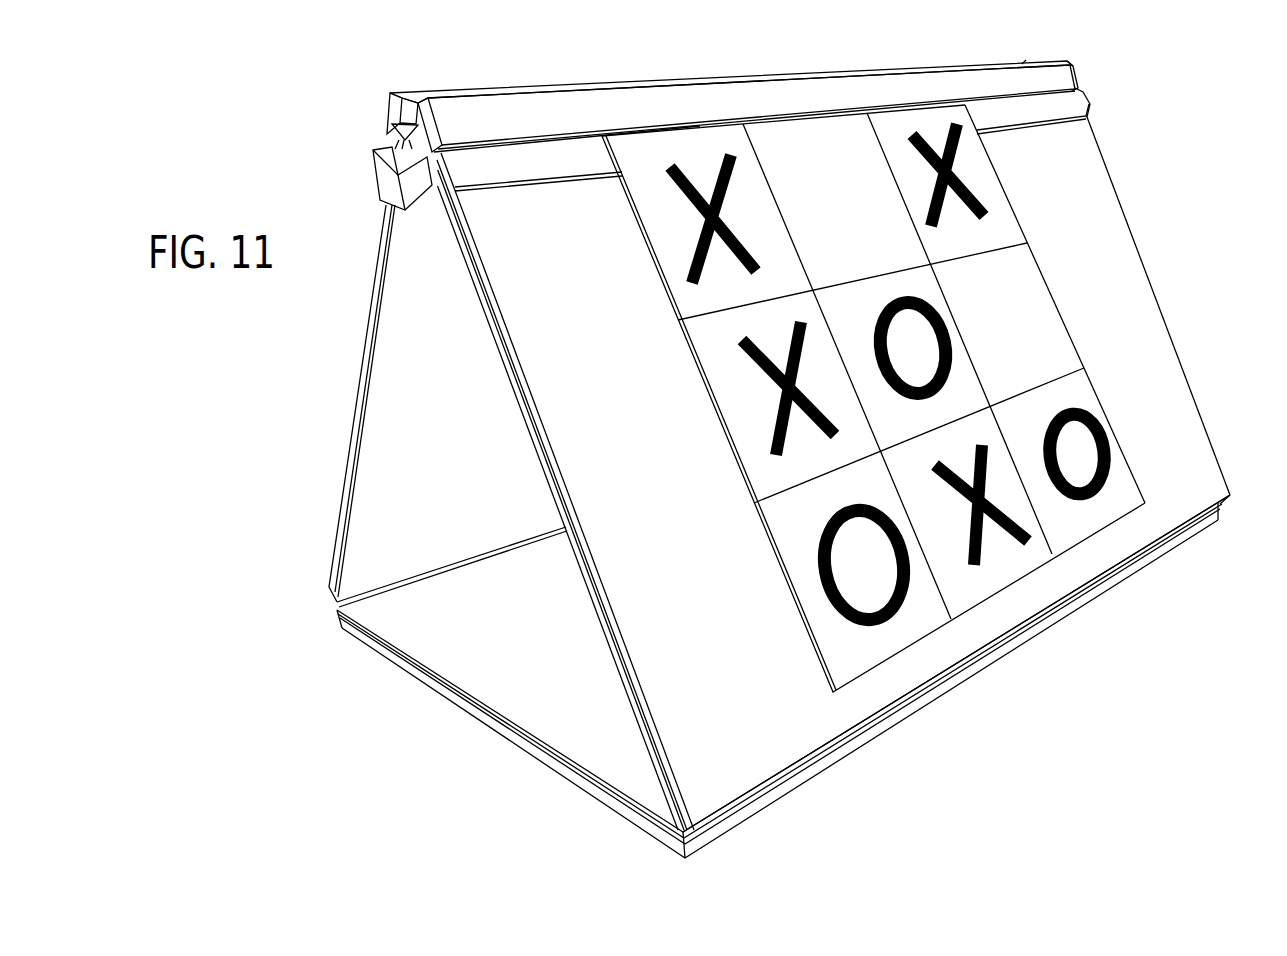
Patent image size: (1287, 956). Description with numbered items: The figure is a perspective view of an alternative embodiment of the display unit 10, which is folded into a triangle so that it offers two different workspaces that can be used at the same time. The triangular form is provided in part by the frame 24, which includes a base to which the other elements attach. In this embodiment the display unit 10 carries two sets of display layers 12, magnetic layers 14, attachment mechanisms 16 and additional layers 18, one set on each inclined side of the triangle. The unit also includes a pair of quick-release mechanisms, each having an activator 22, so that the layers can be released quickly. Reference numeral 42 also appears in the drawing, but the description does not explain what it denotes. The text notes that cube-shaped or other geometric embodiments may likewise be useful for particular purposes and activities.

The display unit 10 is at (1190, 171).
The display layer 12 is at (602, 477).
The magnetic layer 14 is at (407, 366).
The attachment mechanism 16 is at (400, 91).
The additional layer 18 is at (1050, 337).
The activator 22 is at (380, 172).
The frame 24 is at (463, 710).
The game marker 42 is at (1095, 513).